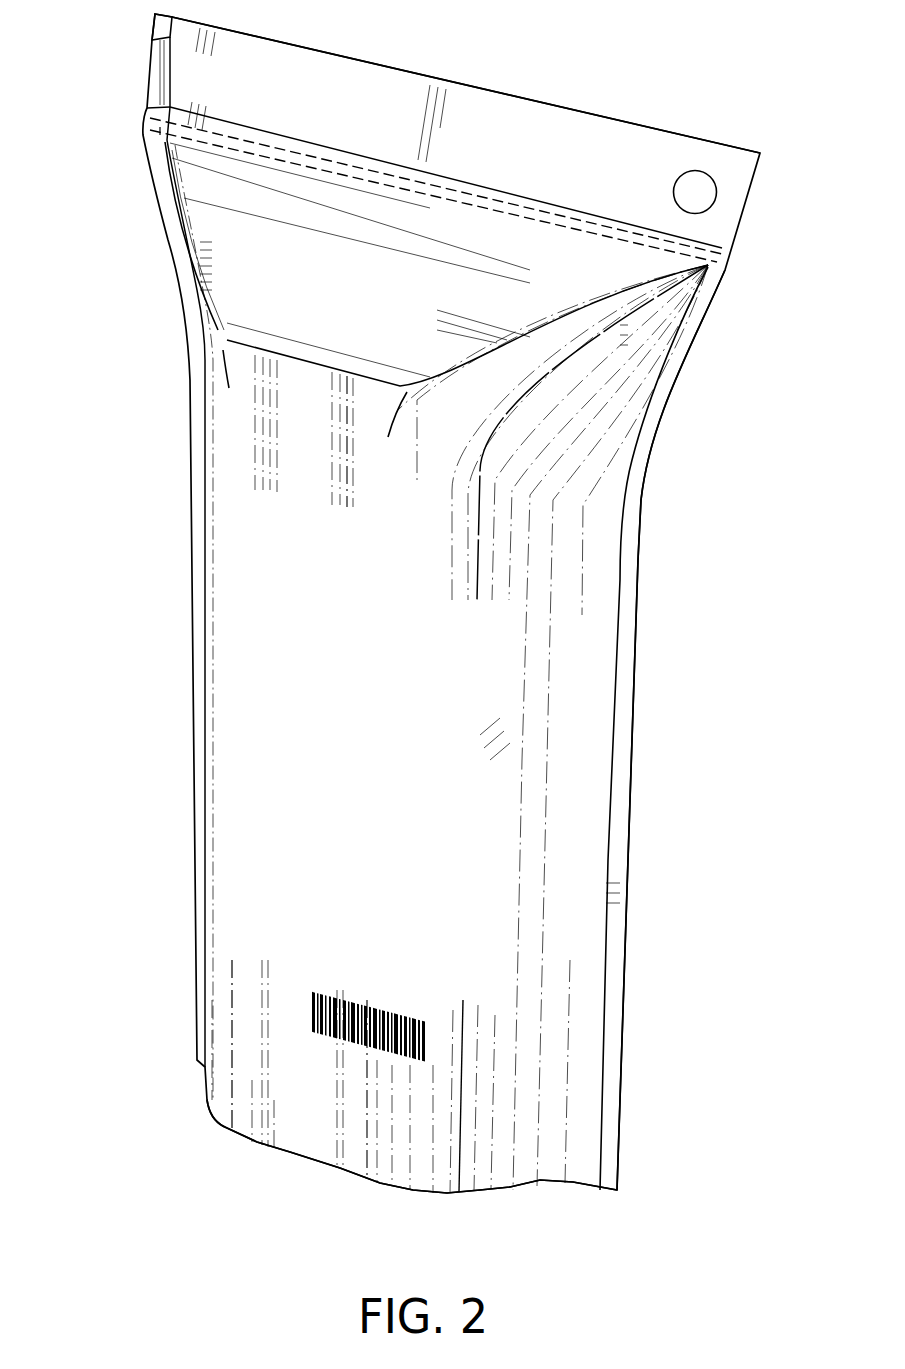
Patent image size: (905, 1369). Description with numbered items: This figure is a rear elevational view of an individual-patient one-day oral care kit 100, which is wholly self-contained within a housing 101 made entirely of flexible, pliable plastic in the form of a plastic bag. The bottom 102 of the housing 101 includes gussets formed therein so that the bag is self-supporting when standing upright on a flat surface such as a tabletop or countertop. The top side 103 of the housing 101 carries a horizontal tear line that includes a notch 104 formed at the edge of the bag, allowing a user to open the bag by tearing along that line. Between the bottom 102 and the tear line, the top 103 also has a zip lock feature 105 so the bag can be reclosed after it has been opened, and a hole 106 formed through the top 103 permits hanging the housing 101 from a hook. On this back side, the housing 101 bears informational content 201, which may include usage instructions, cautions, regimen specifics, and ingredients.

The individual-patient one-day oral care kit 100 is at (435, 627).
The housing 101 is at (622, 794).
The bottom 102 is at (527, 1185).
The top side 103 is at (393, 87).
The notch 104 is at (157, 32).
The zip lock feature 105 is at (717, 262).
The hole 106 is at (718, 192).
The informational content 201 is at (458, 620).